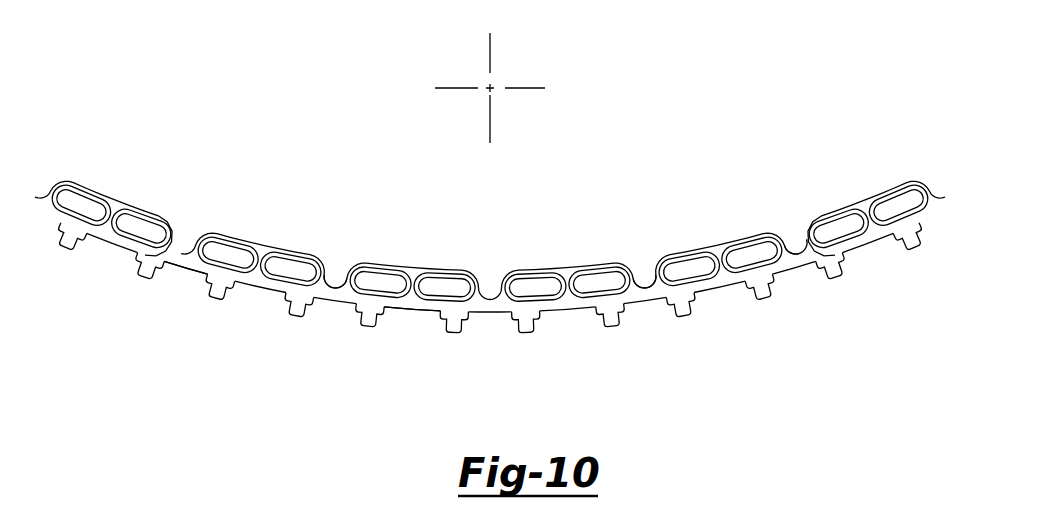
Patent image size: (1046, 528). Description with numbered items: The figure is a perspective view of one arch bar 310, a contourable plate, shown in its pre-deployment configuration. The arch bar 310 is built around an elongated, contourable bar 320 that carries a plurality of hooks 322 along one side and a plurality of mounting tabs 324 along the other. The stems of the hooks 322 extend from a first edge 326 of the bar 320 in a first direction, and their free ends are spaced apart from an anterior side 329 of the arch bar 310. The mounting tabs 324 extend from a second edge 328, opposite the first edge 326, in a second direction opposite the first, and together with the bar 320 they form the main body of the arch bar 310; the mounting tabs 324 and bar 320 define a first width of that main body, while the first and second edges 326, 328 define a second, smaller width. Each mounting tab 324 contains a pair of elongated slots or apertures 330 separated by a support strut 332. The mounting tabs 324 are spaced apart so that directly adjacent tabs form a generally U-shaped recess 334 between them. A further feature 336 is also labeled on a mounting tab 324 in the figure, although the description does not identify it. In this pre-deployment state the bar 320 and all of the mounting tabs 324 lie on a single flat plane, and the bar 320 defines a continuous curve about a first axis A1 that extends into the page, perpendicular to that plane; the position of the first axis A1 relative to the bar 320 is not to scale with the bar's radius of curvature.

The first axis A1 is at (490, 88).
The arch bar 310 is at (760, 388).
The elongated, contourable bar 320 is at (560, 312).
The hooks 322 is at (148, 277).
The mounting tabs 324 is at (120, 206).
The first edge 326 is at (410, 311).
The second edge 328 is at (186, 252).
The anterior side 329 is at (188, 266).
The apertures 330 is at (523, 285).
The support strut 332 is at (112, 221).
The recess 334 is at (333, 285).
The outer rim 336 is at (683, 262).